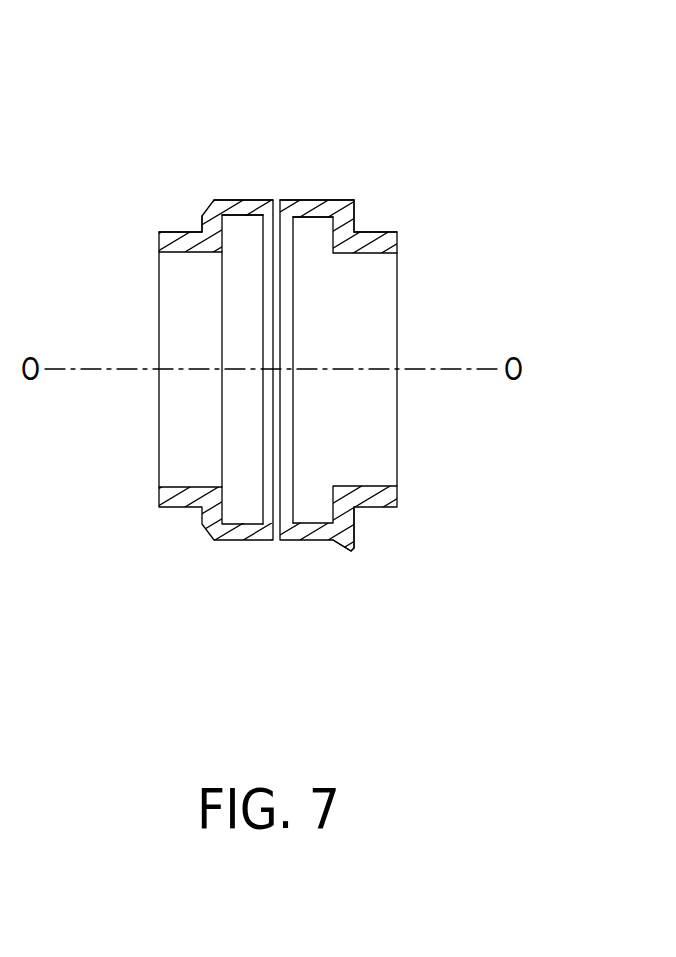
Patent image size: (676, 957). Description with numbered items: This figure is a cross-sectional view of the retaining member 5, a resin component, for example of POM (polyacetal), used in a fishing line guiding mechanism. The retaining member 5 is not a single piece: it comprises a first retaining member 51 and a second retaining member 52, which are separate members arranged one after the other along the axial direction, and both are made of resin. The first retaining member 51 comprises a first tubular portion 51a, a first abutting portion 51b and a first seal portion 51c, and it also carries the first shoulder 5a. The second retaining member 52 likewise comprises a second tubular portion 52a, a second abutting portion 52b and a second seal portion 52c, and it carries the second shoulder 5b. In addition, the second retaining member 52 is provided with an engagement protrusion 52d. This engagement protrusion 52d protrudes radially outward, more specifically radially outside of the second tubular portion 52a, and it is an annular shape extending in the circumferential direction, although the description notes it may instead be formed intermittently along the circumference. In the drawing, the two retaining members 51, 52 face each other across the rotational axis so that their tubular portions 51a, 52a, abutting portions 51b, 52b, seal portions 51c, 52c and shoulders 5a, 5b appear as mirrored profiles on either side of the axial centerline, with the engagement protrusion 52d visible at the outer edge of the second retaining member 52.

The retaining member 5 is at (302, 352).
The first retaining member 51 is at (232, 373).
The second retaining member 52 is at (324, 373).
The first tubular portion 51a is at (249, 199).
The first abutting portion 51b is at (202, 228).
The first seal portion 51c is at (176, 232).
The second tubular portion 52a is at (307, 199).
The second abutting portion 52b is at (357, 218).
The second seal portion 52c is at (381, 232).
The engagement protrusion 52d is at (354, 200).
The first shoulder 5a is at (222, 233).
The second shoulder 5b is at (333, 233).